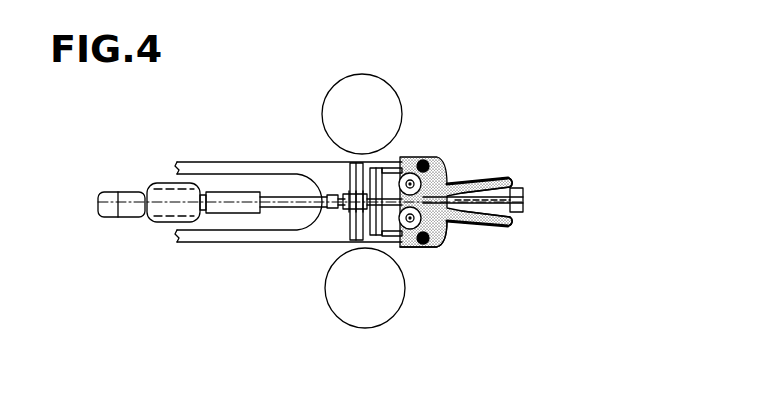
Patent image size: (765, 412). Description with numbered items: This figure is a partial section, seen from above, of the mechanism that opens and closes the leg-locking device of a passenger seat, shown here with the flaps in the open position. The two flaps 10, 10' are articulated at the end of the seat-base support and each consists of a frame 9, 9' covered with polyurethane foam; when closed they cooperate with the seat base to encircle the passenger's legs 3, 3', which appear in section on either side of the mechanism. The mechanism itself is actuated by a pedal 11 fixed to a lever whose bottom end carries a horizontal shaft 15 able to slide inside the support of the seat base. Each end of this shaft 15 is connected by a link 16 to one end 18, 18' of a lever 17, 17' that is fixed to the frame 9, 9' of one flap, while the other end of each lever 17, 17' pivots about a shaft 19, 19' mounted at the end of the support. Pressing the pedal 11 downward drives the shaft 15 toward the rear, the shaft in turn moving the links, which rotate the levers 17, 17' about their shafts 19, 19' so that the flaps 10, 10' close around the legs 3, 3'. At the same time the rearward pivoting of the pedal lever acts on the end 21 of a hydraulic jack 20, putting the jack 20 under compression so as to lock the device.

The leg 3 is at (362, 89).
The leg 3' is at (365, 309).
The frame 9 is at (490, 151).
The frame 9' is at (492, 251).
The flap 10 is at (548, 163).
The flap 10' is at (550, 236).
The pedal 11 is at (525, 200).
The horizontal shaft 15 is at (352, 228).
The link 16 is at (368, 166).
The lever 17 is at (456, 171).
The lever 17' is at (450, 267).
The end of lever 18 is at (432, 136).
The end of lever 18' is at (435, 270).
The shaft 19 is at (416, 117).
The shaft 19' is at (418, 290).
The hydraulic jack 20 is at (218, 208).
The end of hydraulic jack 21 is at (330, 205).